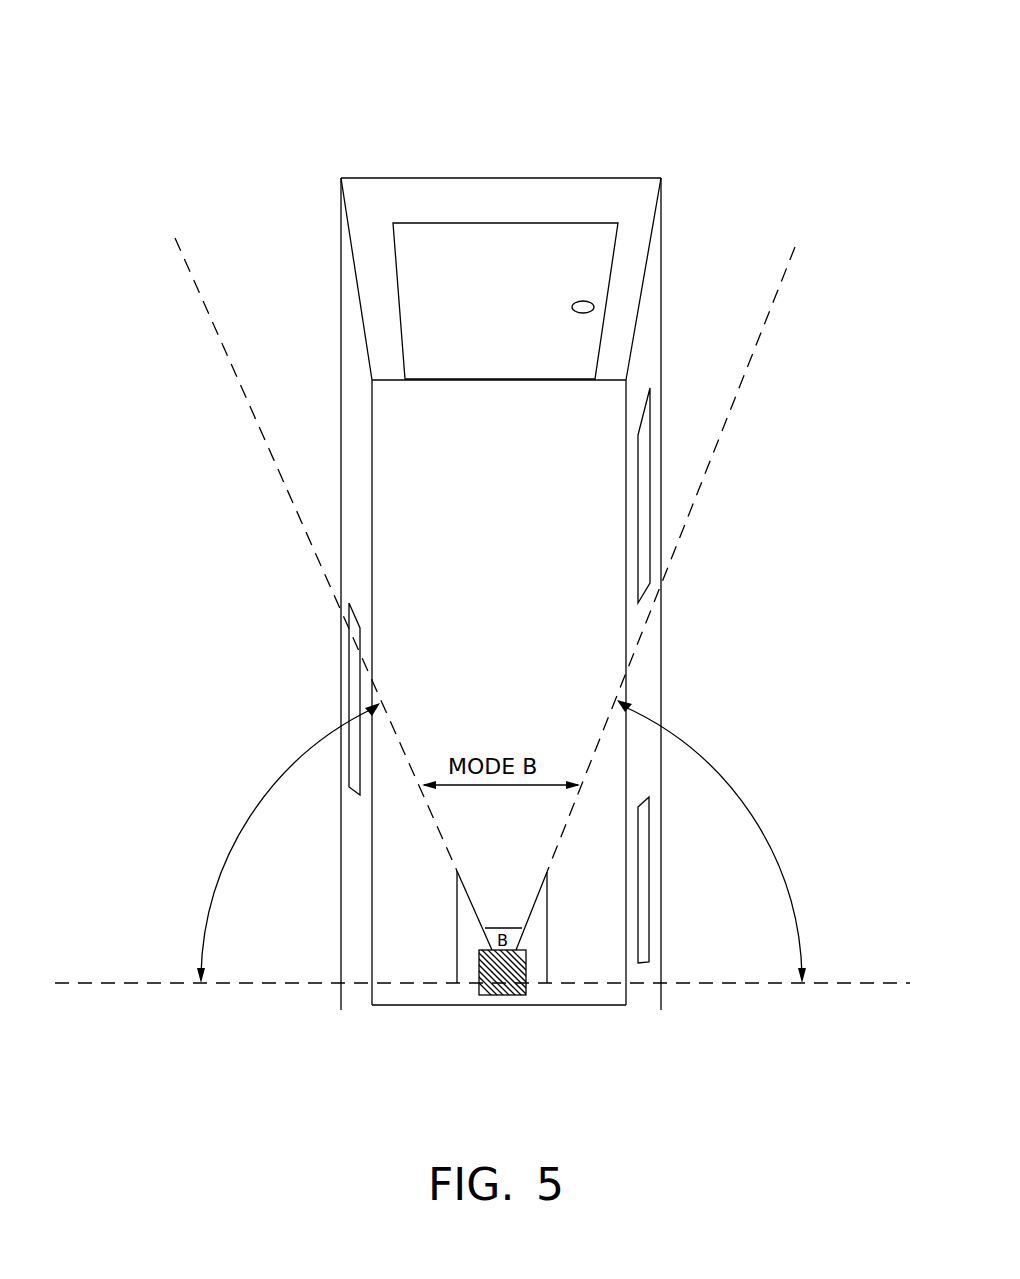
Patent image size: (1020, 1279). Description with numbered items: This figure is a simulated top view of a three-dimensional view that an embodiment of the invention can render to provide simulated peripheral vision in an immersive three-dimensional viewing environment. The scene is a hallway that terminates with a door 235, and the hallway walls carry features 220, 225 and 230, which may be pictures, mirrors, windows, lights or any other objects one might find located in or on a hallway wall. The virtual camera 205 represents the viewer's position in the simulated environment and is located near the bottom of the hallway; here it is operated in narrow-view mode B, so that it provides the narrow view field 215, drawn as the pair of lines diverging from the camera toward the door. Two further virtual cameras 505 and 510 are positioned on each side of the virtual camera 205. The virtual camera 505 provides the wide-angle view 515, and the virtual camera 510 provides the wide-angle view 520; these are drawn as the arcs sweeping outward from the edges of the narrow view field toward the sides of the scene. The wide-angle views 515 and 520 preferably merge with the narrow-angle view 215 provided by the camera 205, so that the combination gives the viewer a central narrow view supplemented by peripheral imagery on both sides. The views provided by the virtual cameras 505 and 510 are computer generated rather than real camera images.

The virtual camera 205 is at (497, 995).
The view field 215 is at (253, 417).
The hallway feature 220 is at (655, 471).
The hallway feature 225 is at (654, 853).
The hallway feature 230 is at (336, 675).
The door 235 is at (517, 247).
The virtual camera 505 is at (443, 985).
The virtual camera 510 is at (547, 983).
The wide-angle view 515 is at (228, 852).
The wide-angle view 520 is at (757, 818).